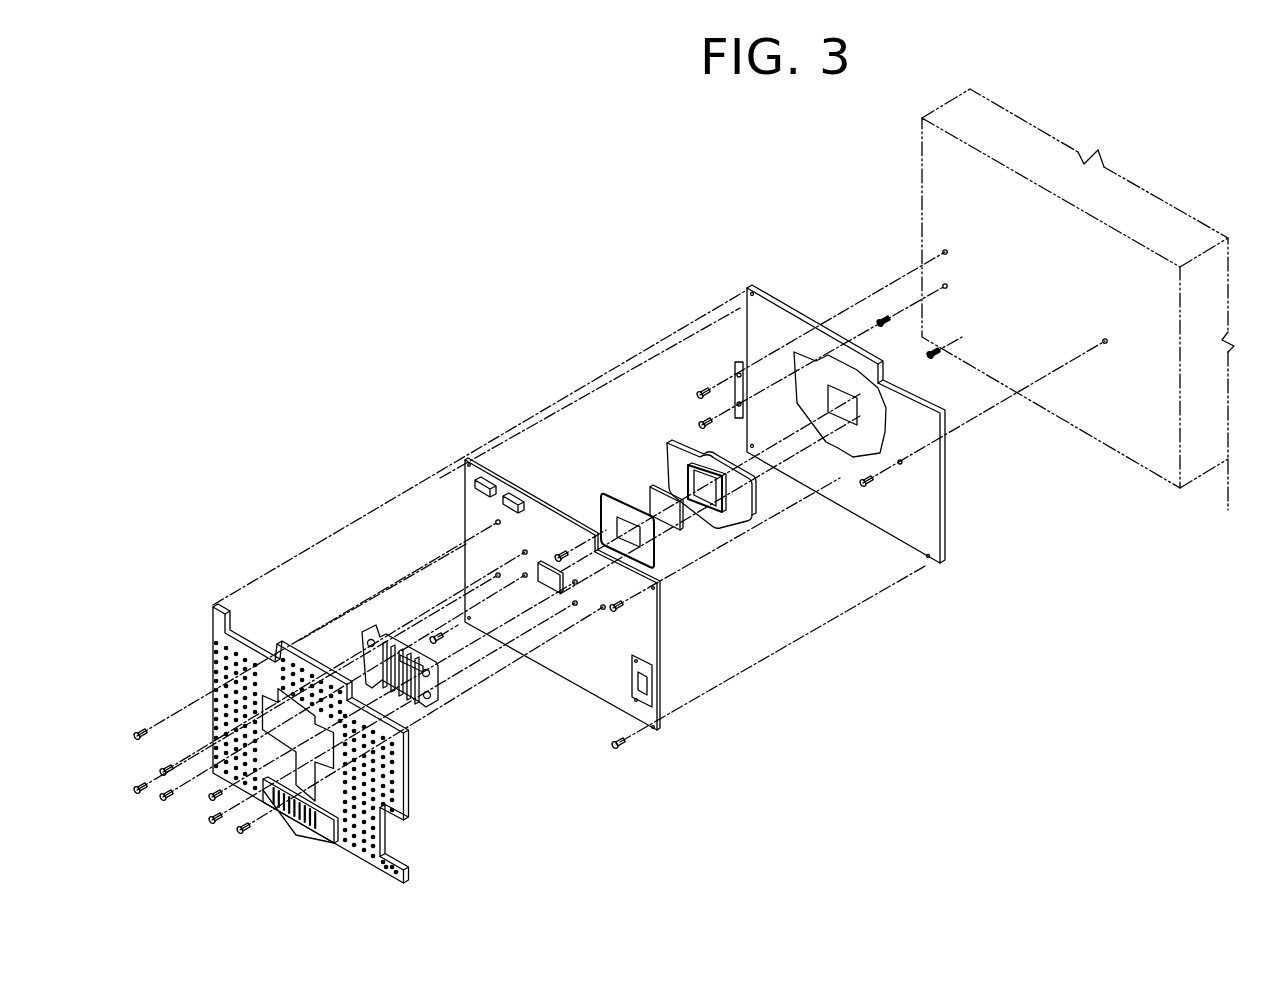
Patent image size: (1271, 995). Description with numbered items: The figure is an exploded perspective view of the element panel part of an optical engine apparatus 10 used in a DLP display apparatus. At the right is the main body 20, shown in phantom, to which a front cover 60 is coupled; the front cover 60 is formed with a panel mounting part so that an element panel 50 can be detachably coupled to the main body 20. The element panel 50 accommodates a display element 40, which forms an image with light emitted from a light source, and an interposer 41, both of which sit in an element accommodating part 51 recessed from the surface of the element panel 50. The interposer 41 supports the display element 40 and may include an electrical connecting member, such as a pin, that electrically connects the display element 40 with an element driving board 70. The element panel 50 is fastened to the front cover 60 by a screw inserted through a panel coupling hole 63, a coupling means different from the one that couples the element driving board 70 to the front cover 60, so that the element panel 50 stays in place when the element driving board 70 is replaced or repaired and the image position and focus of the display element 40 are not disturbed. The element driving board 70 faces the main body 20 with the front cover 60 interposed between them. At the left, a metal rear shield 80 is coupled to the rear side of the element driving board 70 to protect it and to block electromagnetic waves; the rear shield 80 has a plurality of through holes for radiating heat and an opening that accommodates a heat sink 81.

The optical engine apparatus 10 is at (298, 256).
The main body 20 is at (935, 185).
The display element 40 is at (658, 490).
The interposer 41 is at (610, 493).
The element panel 50 is at (745, 528).
The element accommodating part 51 is at (716, 524).
The front cover 60 is at (747, 288).
The panel coupling hole 63 is at (800, 352).
The element driving board 70 is at (573, 673).
The rear shield 80 is at (407, 798).
The heat sink 81 is at (427, 712).